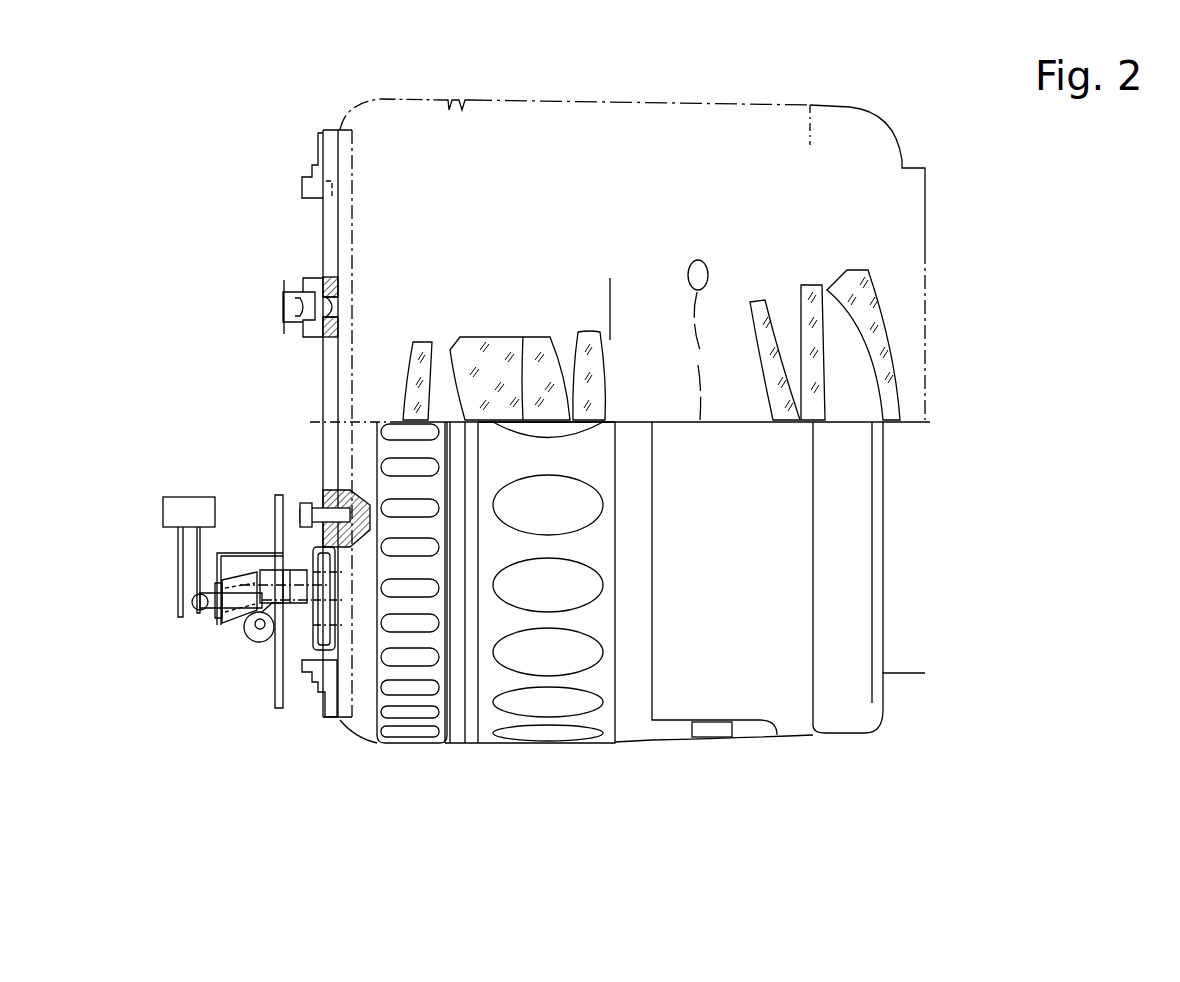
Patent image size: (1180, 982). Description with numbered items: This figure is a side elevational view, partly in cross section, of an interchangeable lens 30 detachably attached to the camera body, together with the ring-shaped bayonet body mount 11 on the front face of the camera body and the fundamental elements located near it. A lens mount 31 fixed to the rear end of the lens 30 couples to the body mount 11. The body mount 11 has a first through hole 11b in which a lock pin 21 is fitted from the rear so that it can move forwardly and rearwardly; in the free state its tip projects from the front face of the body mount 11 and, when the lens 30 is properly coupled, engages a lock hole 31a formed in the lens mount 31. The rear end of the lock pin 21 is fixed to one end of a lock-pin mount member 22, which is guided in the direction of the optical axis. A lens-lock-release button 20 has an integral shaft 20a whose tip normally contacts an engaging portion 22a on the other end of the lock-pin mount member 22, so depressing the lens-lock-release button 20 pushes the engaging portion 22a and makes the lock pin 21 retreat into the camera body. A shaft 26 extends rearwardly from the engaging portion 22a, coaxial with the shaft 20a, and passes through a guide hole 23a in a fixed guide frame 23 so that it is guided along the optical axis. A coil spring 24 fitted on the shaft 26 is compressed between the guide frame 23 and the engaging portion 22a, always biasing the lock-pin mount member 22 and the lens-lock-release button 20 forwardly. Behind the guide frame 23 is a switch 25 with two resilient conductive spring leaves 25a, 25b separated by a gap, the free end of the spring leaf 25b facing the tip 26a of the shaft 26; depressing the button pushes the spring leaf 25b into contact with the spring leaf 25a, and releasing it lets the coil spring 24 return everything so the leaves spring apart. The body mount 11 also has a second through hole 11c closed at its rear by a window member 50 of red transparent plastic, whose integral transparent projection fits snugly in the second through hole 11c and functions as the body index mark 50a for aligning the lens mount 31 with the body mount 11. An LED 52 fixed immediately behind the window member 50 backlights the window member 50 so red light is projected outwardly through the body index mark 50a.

The body mount 11 is at (332, 222).
The first through hole 11b is at (323, 540).
The second through hole 11c is at (340, 303).
The lens-lock-release button 20 is at (313, 643).
The shaft 20a is at (297, 675).
The lock pin 21 is at (342, 508).
The lock-pin mount member 22 is at (247, 550).
The engaging portion 22a is at (273, 643).
The fixed guide frame 23 is at (215, 552).
The guide hole 23a is at (216, 587).
The coil spring 24 is at (228, 615).
The switch 25 is at (163, 509).
The spring leaf 25a is at (178, 567).
The spring leaf 25b is at (197, 572).
The shaft 26 is at (207, 633).
The tip 26a is at (200, 628).
The lens 30 is at (784, 73).
The lens mount 31 is at (345, 237).
The lock hole 31a is at (340, 543).
The window member 50 is at (307, 338).
The body index mark 50a is at (337, 312).
The LED 52 is at (290, 303).